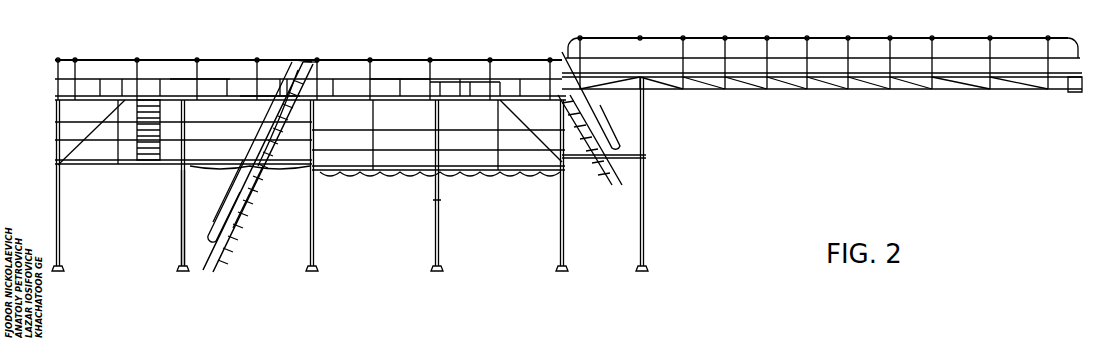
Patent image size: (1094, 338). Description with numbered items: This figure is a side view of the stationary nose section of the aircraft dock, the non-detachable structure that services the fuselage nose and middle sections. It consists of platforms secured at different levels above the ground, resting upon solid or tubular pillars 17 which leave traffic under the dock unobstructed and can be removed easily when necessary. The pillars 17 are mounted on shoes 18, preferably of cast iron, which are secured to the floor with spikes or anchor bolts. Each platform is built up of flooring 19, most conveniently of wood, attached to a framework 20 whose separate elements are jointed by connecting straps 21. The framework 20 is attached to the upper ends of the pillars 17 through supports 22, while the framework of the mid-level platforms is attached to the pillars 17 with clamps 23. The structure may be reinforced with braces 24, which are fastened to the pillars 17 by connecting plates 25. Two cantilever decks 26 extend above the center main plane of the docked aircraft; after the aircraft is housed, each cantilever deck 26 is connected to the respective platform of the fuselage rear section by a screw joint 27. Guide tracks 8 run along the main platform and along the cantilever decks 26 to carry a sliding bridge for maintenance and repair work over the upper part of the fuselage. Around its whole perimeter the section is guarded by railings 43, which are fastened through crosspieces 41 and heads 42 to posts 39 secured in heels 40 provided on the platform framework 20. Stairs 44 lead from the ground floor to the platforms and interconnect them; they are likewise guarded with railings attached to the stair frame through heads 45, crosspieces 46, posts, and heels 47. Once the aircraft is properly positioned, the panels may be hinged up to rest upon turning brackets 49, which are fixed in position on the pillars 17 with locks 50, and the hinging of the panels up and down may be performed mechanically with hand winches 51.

The guide tracks 8 is at (400, 78).
The pillars 17 is at (175, 102).
The shoes 18 is at (316, 265).
The flooring 19 is at (122, 97).
The framework 20 is at (86, 98).
The connecting straps 21 is at (85, 100).
The supports 22 is at (178, 101).
The clamps 23 is at (177, 163).
The braces 24 is at (628, 156).
The connecting plates 25 is at (314, 162).
The cantilever decks 26 is at (707, 90).
The screw joint 27 is at (1078, 89).
The posts 39 is at (197, 76).
The heels 40 is at (253, 95).
The crosspieces 41 is at (257, 95).
The heads 42 is at (279, 92).
The railings 43 is at (297, 64).
The stairs 44 is at (590, 92).
The heads 45 is at (298, 68).
The crosspieces 46 is at (303, 163).
The heels 47 is at (243, 157).
The turning brackets 49 is at (432, 180).
The locks 50 is at (440, 193).
The hand winches 51 is at (440, 210).